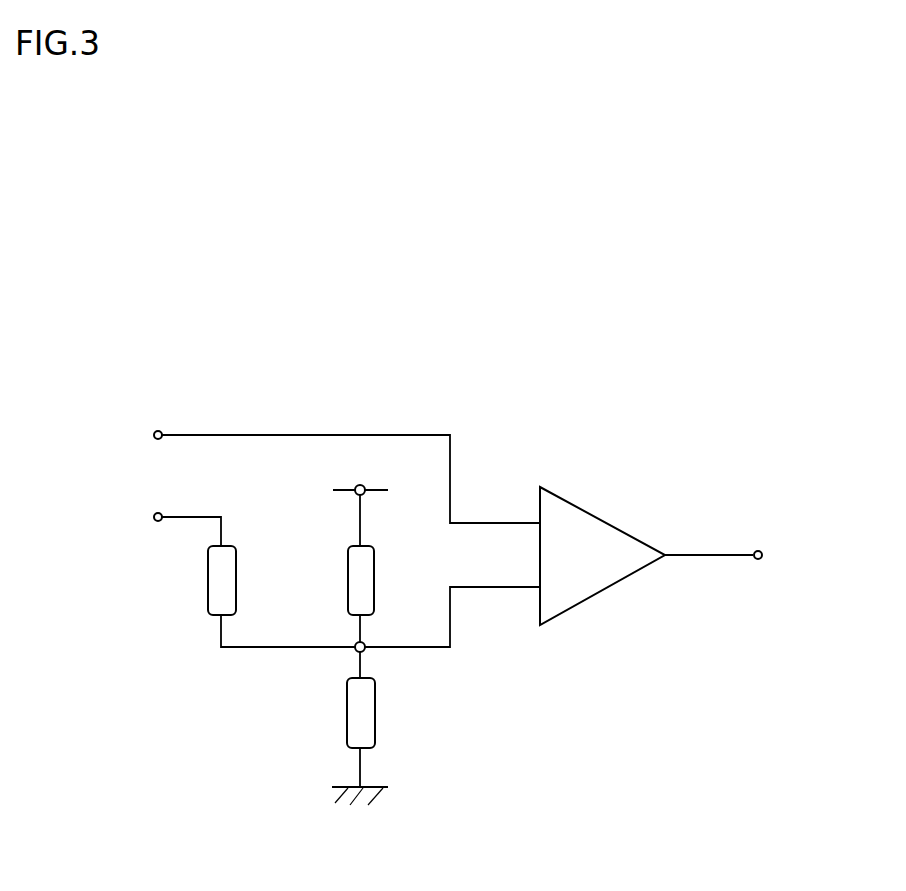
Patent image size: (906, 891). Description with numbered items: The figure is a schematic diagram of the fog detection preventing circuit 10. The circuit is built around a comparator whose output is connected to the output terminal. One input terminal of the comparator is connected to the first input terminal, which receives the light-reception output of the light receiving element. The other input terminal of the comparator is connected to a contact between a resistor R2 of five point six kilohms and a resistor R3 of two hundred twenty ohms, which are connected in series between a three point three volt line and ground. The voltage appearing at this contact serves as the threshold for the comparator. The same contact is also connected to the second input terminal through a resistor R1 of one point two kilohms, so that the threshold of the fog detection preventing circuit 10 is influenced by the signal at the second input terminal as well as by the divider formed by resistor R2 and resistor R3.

The fog detection preventing circuit 10 is at (90, 320).
The resistor R1 is at (208, 583).
The resistor R2 is at (347, 565).
The resistor R3 is at (347, 720).